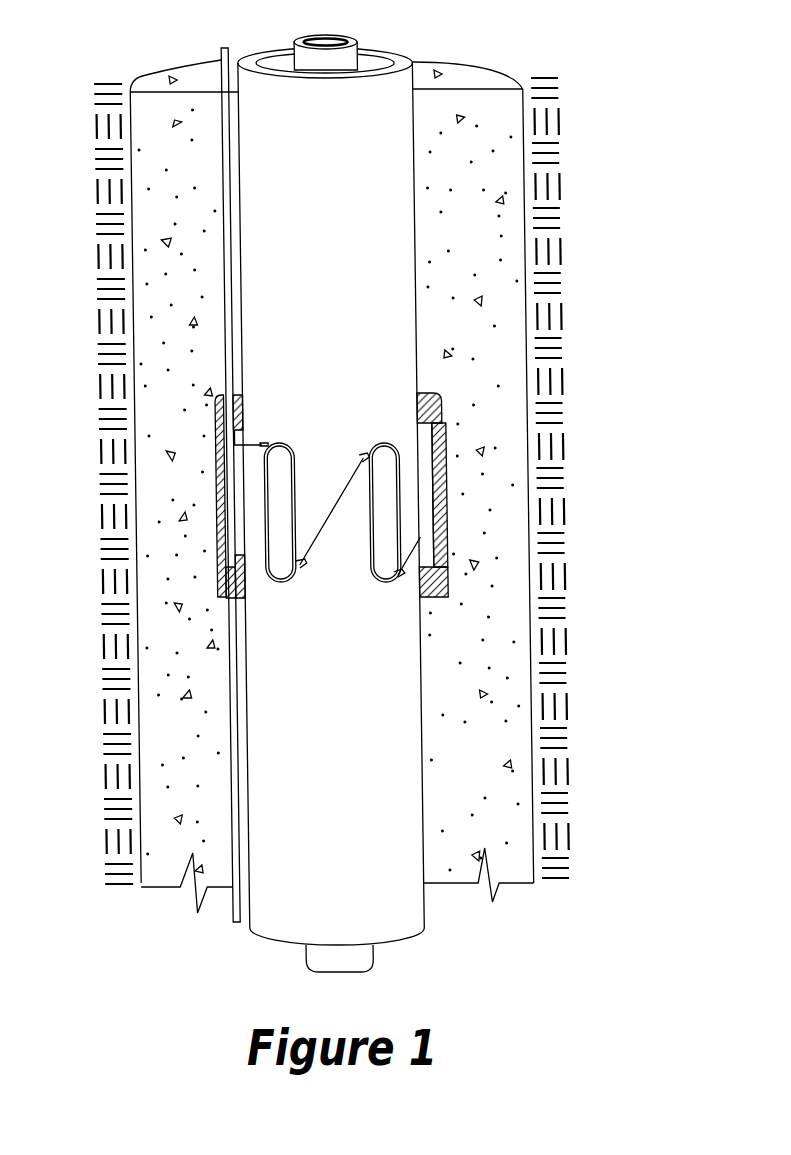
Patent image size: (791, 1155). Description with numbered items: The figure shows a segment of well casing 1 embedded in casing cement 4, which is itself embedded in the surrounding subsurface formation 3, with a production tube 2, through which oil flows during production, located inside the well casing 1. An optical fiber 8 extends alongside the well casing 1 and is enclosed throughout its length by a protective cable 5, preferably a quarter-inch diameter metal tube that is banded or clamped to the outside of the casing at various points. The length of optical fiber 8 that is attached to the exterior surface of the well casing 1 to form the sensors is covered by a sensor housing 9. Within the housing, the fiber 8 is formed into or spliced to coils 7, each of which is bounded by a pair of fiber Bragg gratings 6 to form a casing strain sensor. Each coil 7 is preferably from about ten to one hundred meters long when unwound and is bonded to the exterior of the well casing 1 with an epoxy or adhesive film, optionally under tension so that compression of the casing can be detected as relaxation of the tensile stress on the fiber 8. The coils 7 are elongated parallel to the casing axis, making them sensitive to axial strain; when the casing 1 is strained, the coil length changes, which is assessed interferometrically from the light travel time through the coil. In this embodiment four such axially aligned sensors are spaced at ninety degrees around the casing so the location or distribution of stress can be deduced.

The well casing 1 is at (410, 153).
The production tube 2 is at (345, 52).
The subsurface formation 3 is at (566, 772).
The casing cement 4 is at (496, 312).
The protective cable 5 is at (220, 132).
The fiber Bragg gratings 6 is at (293, 567).
The coils 7 is at (393, 492).
The optical fiber 8 is at (211, 435).
The sensor housing 9 is at (476, 398).